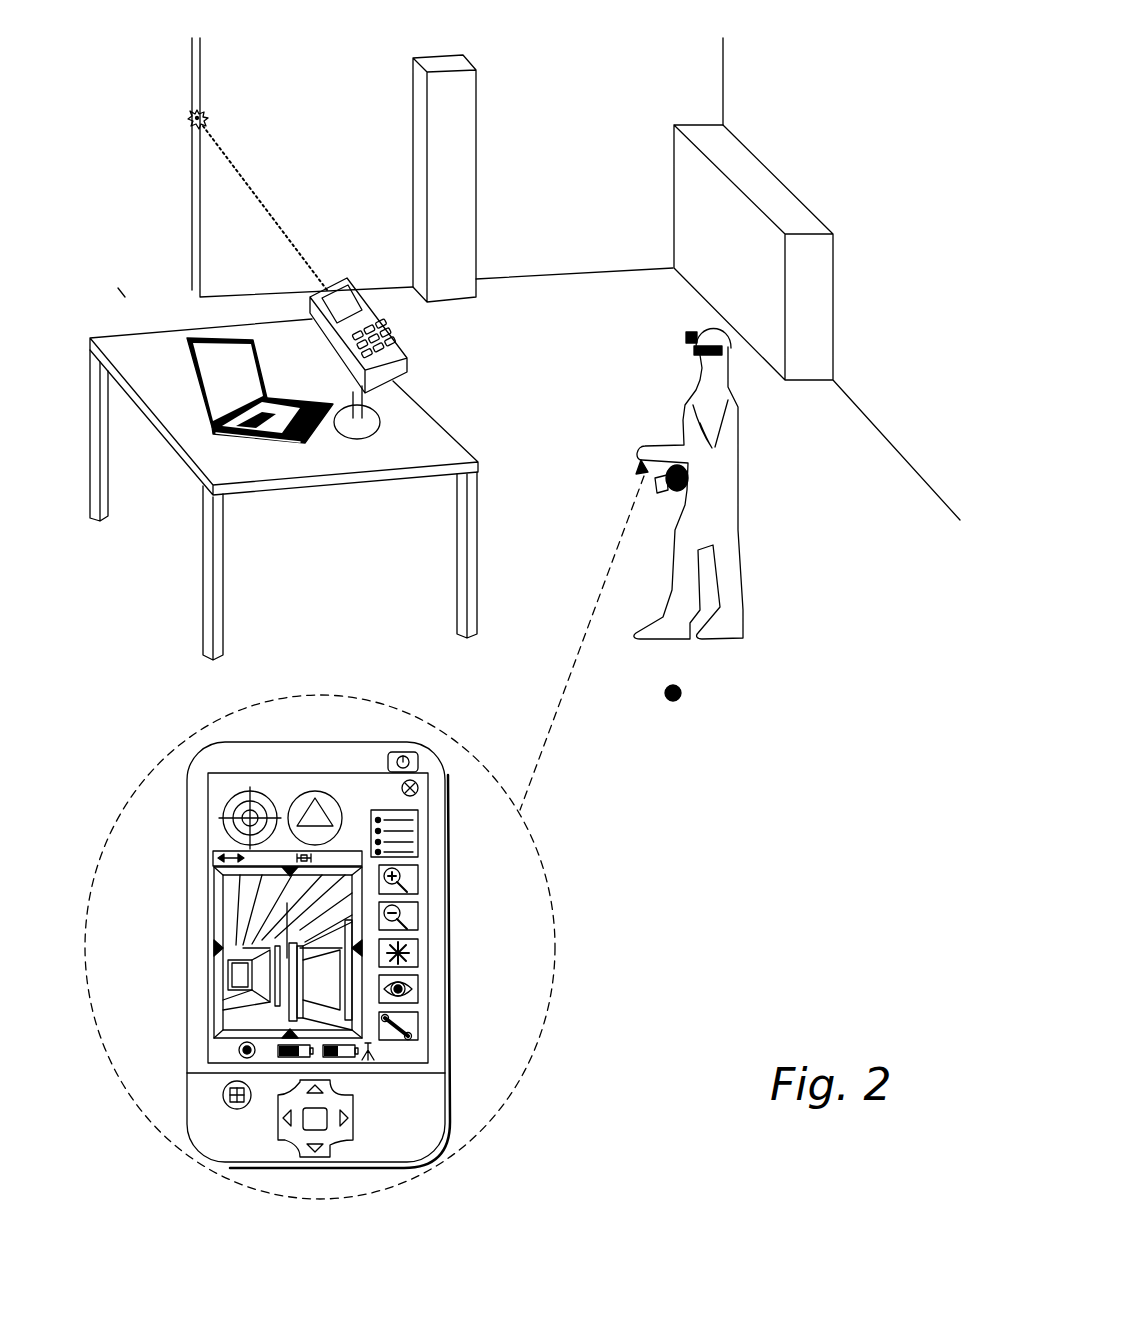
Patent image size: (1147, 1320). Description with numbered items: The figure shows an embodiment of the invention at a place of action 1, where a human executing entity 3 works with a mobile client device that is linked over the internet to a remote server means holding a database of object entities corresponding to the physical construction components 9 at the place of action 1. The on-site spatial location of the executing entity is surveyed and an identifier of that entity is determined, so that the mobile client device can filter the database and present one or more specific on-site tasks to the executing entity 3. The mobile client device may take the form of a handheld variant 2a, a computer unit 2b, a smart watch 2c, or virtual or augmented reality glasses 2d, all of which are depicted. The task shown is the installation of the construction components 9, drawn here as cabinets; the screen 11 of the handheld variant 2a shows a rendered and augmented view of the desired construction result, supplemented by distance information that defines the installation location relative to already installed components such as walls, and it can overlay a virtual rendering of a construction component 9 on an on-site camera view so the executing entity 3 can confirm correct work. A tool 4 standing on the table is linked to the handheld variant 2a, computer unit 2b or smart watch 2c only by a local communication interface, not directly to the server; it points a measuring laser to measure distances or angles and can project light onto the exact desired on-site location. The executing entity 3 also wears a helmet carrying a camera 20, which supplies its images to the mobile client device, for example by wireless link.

The place of action 1 is at (680, 697).
The handheld variant 2a is at (408, 955).
The computer unit 2b is at (232, 427).
The smart watch 2c is at (687, 487).
The virtual or augmented reality glasses 2d is at (697, 355).
The human executing entity 3 is at (720, 462).
The tool 4 is at (387, 365).
The construction components 9 is at (432, 198).
The screen 11 is at (323, 983).
The camera 20 is at (685, 333).